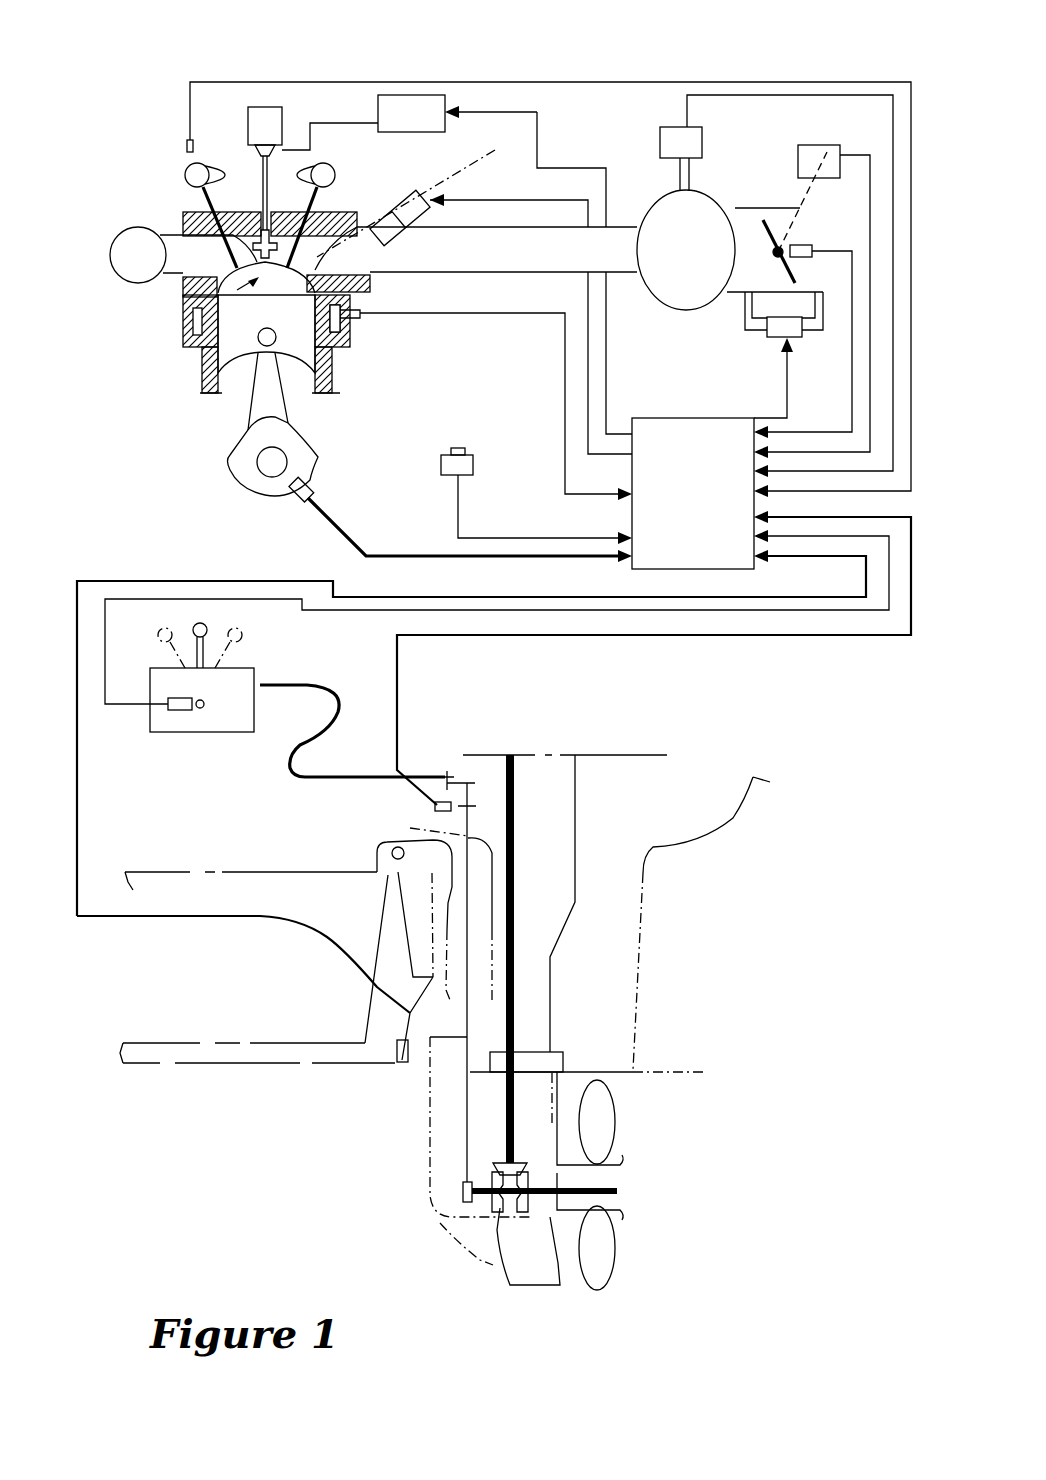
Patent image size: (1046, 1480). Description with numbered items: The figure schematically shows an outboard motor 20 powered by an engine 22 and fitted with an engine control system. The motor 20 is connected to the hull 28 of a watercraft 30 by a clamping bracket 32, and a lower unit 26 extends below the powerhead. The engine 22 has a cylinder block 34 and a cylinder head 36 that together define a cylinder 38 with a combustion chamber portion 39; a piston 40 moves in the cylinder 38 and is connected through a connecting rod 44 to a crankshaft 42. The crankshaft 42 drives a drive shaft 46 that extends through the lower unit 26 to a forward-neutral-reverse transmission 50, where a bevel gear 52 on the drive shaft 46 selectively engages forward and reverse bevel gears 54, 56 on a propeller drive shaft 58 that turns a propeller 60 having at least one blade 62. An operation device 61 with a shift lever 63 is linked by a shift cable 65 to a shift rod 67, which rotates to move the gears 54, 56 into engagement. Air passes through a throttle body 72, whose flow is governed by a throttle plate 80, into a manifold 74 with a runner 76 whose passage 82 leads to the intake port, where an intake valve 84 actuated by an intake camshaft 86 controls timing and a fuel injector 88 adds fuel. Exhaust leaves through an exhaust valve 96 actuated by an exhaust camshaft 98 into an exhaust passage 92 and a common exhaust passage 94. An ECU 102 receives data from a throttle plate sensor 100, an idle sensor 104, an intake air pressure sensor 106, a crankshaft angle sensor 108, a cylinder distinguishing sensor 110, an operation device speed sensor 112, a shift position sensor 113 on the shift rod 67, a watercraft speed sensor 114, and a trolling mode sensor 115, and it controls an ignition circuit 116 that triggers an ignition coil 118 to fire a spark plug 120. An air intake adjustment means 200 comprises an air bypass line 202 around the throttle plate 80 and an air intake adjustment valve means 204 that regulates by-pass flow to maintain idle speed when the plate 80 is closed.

The outboard motor 20 is at (733, 46).
The engine 22 is at (126, 124).
The lower unit 26 is at (742, 848).
The hull 28 is at (370, 1063).
The watercraft 30 is at (200, 1085).
The clamping bracket 32 is at (471, 805).
The cylinder block 34 is at (203, 360).
The cylinder head 36 is at (183, 225).
The cylinder 38 is at (222, 390).
The combustion chamber portion 39 is at (183, 318).
The piston 40 is at (307, 357).
The crankshaft 42 is at (320, 443).
The connecting rod 44 is at (290, 408).
The drive shaft 46 is at (512, 815).
The forward-neutral-reverse transmission 50 is at (466, 1216).
The bevel gear 52 is at (517, 1163).
The forward bevel gear 54 is at (497, 1237).
The reverse bevel gear 56 is at (538, 1217).
The propeller drive shaft 58 is at (603, 1187).
The propeller 60 is at (636, 1132).
The operation device 61 is at (310, 658).
The blade 62 is at (617, 1248).
The shift lever 63 is at (233, 628).
The shift cable 65 is at (290, 762).
The shift rod 67 is at (467, 1145).
The throttle body 72 is at (730, 292).
The manifold 74 is at (660, 290).
The runner 76 is at (497, 282).
The throttle plate 80 is at (767, 237).
The passage 82 is at (372, 272).
The intake valve 84 is at (327, 202).
The intake camshaft 86 is at (327, 163).
The fuel injector 88 is at (415, 177).
The exhaust passage 92 is at (183, 277).
The common exhaust passage 94 is at (110, 250).
The exhaust valve 96 is at (233, 222).
The exhaust camshaft 98 is at (188, 172).
The throttle plate sensor 100 is at (810, 147).
The ECU 102 is at (680, 417).
The idle sensor 104 is at (802, 240).
The intake air pressure sensor 106 is at (702, 143).
The crankshaft angle sensor 108 is at (317, 493).
The cylinder distinguishing sensor 110 is at (198, 138).
The operation device speed sensor 112 is at (180, 717).
The shift position sensor 113 is at (435, 808).
The watercraft speed sensor 114 is at (407, 1062).
The trolling mode sensor 115 is at (480, 470).
The ignition circuit 116 is at (447, 100).
The ignition coil 118 is at (283, 110).
The spark plug 120 is at (272, 238).
The air intake adjustment means 200 is at (763, 360).
The air bypass line 202 is at (803, 330).
The air intake adjustment valve means 204 is at (795, 350).